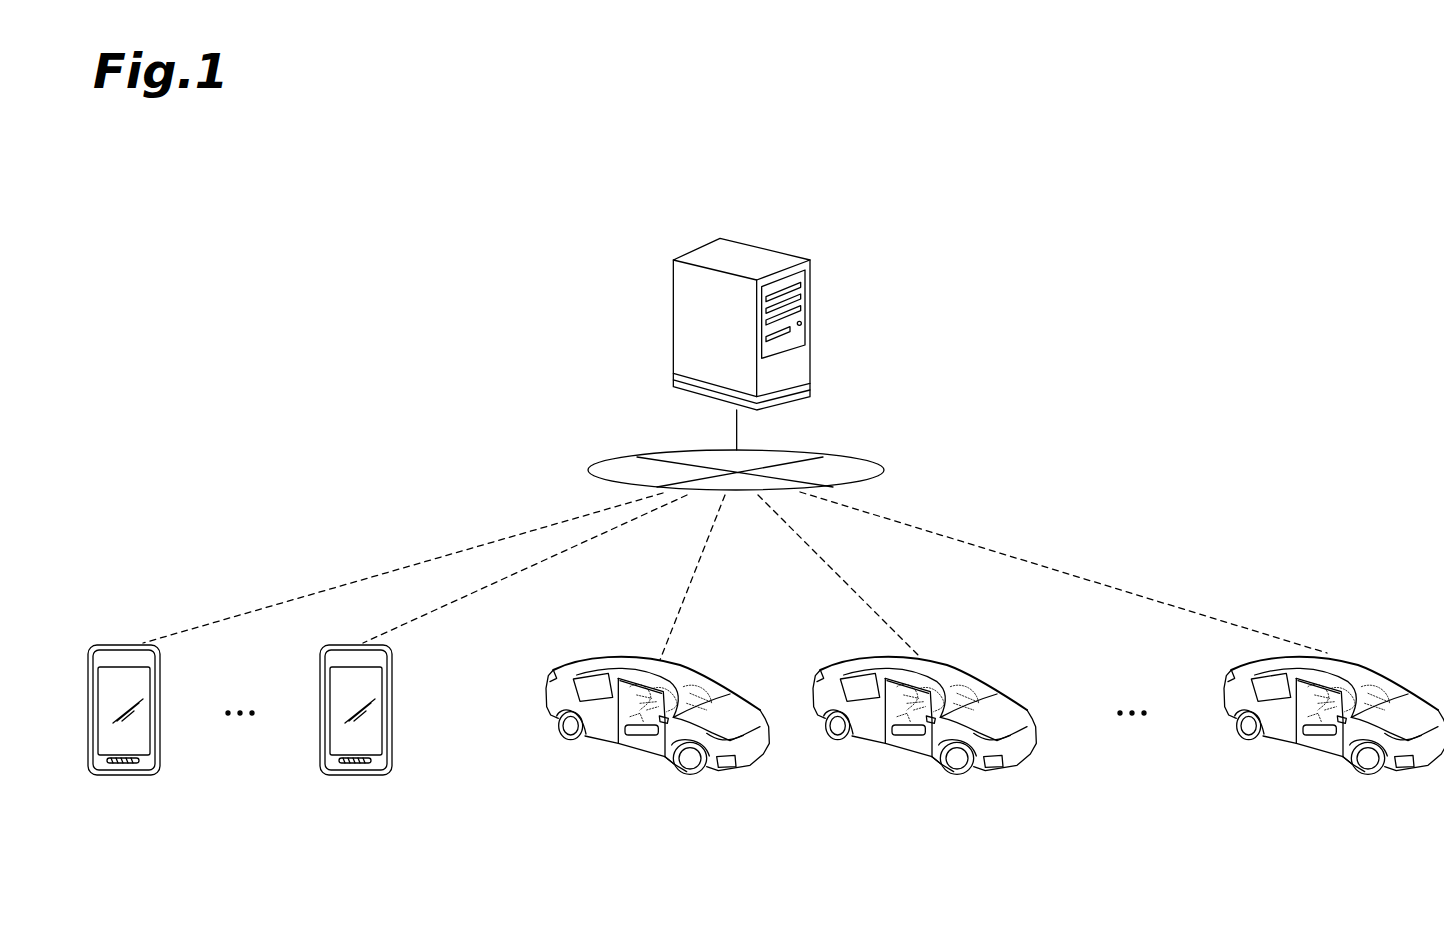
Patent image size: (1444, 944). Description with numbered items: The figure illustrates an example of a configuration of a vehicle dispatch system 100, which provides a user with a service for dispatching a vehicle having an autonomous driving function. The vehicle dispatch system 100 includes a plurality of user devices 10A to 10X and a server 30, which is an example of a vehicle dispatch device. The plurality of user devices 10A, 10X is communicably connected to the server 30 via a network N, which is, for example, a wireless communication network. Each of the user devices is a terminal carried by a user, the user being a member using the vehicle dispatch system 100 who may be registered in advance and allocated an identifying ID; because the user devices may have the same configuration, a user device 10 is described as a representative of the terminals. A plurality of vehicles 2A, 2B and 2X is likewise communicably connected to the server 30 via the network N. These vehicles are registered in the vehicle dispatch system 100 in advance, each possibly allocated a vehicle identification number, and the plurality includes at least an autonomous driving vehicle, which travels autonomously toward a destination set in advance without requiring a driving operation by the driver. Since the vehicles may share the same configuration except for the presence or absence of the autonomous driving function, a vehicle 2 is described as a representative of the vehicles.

The vehicle dispatch system 100 is at (856, 210).
The server 30 is at (774, 254).
The network N is at (852, 457).
The user device 10 is at (90, 823).
The user device 10A is at (161, 673).
The user device 10X is at (393, 673).
The vehicle 2 is at (548, 823).
The vehicle 2A is at (692, 664).
The vehicle 2B is at (935, 663).
The vehicle 2X is at (1348, 663).